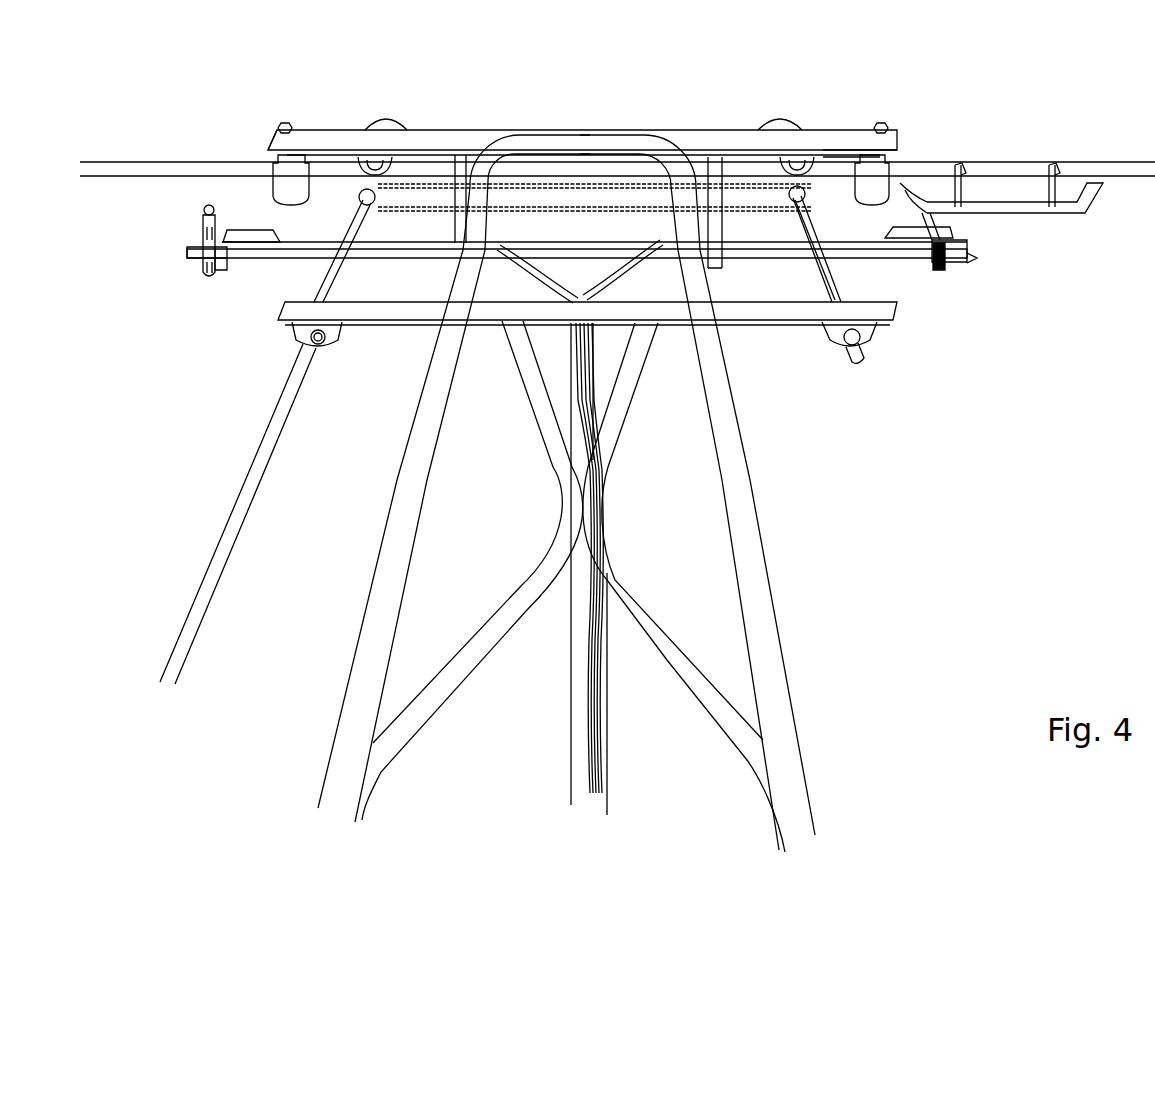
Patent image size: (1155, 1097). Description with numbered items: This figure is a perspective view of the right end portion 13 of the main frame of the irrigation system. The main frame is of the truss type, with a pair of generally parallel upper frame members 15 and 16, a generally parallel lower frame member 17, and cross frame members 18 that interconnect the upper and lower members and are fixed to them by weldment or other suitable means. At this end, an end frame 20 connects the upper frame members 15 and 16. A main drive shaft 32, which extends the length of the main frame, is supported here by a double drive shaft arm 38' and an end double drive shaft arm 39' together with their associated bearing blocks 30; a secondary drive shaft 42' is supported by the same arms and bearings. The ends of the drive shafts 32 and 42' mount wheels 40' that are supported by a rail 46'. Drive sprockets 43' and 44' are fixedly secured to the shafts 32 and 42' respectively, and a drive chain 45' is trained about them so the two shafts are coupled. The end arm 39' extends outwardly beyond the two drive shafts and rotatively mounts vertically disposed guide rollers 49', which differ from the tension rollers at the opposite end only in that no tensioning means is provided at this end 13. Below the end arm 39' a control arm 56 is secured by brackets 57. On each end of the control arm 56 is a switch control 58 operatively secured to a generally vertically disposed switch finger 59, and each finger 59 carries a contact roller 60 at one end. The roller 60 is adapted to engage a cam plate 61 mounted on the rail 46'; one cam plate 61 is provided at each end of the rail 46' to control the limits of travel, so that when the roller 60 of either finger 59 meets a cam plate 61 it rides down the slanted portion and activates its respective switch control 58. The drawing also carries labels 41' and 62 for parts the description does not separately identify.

The right end portion 13 is at (881, 559).
The upper frame member 15 is at (740, 491).
The upper frame member 16 is at (407, 498).
The lower frame member 17 is at (577, 738).
The cross frame members 18 is at (532, 383).
The end frame 20 is at (617, 143).
The bearing blocks 30 is at (298, 340).
The main drive shaft 32 is at (260, 447).
The double drive shaft arm 38' is at (537, 341).
The end double drive shaft arm 39' is at (789, 104).
The wheels 40' is at (409, 91).
The clamp saddle 41' is at (792, 91).
The secondary drive shaft 42' is at (878, 264).
The drive sprocket 43' is at (347, 128).
The drive sprocket 44' is at (830, 127).
The drive chain 45' is at (595, 131).
The rail 46' is at (617, 114).
The guide rollers 49' is at (594, 128).
The control arm 56 is at (567, 243).
The brackets 57 is at (457, 217).
The switch control 58 is at (255, 233).
The switch finger 59 is at (195, 225).
The contact roller 60 is at (197, 213).
The cam plate 61 is at (1015, 203).
The wire harness 62 is at (535, 265).